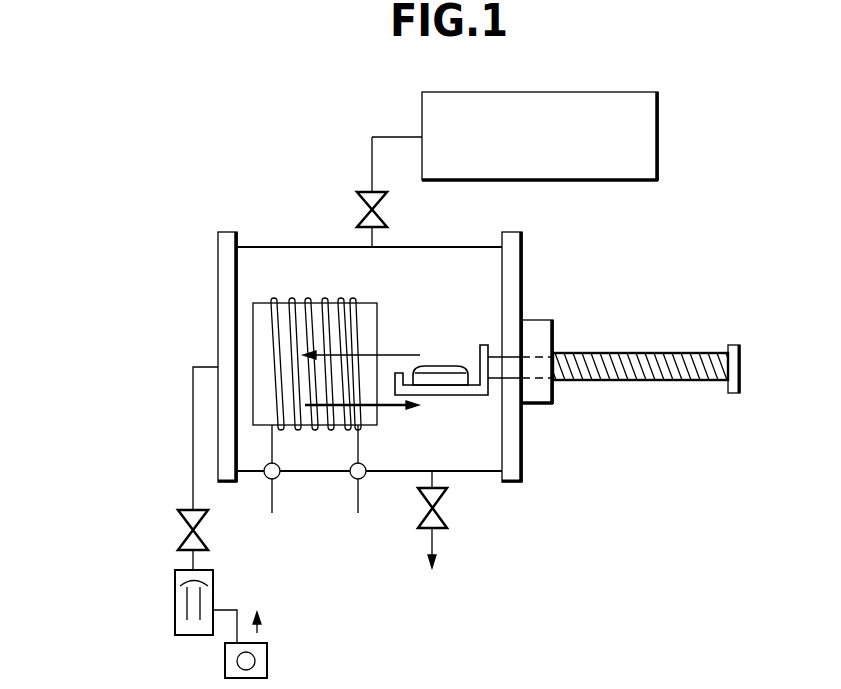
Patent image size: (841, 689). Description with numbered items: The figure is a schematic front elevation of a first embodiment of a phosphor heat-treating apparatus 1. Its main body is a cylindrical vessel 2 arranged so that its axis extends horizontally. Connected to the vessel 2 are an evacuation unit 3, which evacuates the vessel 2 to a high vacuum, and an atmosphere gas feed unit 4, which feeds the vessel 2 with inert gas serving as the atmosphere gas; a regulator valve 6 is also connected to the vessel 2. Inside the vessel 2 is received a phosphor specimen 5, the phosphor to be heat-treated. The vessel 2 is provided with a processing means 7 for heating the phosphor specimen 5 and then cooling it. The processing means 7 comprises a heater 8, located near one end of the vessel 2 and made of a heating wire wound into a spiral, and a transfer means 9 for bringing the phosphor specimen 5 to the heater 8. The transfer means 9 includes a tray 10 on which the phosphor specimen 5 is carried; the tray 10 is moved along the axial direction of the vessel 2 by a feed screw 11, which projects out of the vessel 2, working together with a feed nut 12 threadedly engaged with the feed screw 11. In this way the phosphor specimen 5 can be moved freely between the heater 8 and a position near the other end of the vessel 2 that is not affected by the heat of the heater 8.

The phosphor heat-treating apparatus 1 is at (220, 195).
The cylindrical vessel 2 is at (288, 247).
The evacuation unit 3 is at (175, 578).
The atmosphere gas feed unit 4 is at (658, 122).
The phosphor specimen 5 is at (447, 363).
The regulator valve 6 is at (447, 524).
The processing means 7 is at (675, 499).
The heater 8 is at (377, 420).
The transfer means 9 is at (567, 376).
The tray 10 is at (462, 393).
The feed screw 11 is at (595, 447).
The feed nut 12 is at (543, 393).